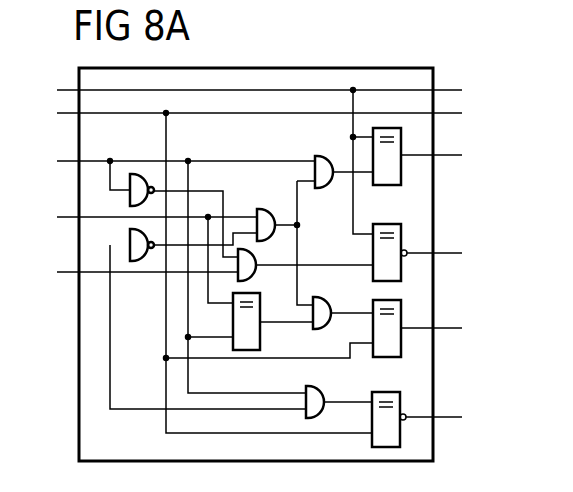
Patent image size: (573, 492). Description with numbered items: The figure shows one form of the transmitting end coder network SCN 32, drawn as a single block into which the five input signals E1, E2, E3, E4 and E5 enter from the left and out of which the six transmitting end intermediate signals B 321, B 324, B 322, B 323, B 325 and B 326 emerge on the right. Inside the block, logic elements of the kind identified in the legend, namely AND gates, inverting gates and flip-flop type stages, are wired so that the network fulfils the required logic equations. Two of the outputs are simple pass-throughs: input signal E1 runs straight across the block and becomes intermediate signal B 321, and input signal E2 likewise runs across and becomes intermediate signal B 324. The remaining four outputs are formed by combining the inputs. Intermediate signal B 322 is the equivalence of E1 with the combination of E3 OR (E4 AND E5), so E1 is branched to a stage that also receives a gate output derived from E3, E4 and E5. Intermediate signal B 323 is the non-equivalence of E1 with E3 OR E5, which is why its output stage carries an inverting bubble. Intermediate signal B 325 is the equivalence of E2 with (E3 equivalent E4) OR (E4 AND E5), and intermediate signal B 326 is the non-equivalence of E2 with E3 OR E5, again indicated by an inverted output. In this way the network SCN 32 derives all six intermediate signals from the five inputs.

The transmitting end coder network 32 is at (413, 68).
The input signal E1 is at (229, 87).
The input signal E2 is at (229, 112).
The input signal E3 is at (170, 162).
The input signal E4 is at (141, 217).
The input signal E5 is at (131, 272).
The transmitting end intermediate signal 321 is at (475, 92).
The transmitting end intermediate signal 324 is at (475, 118).
The transmitting end intermediate signal 322 is at (445, 156).
The transmitting end intermediate signal 323 is at (443, 252).
The transmitting end intermediate signal 325 is at (443, 328).
The transmitting end intermediate signal 326 is at (443, 419).